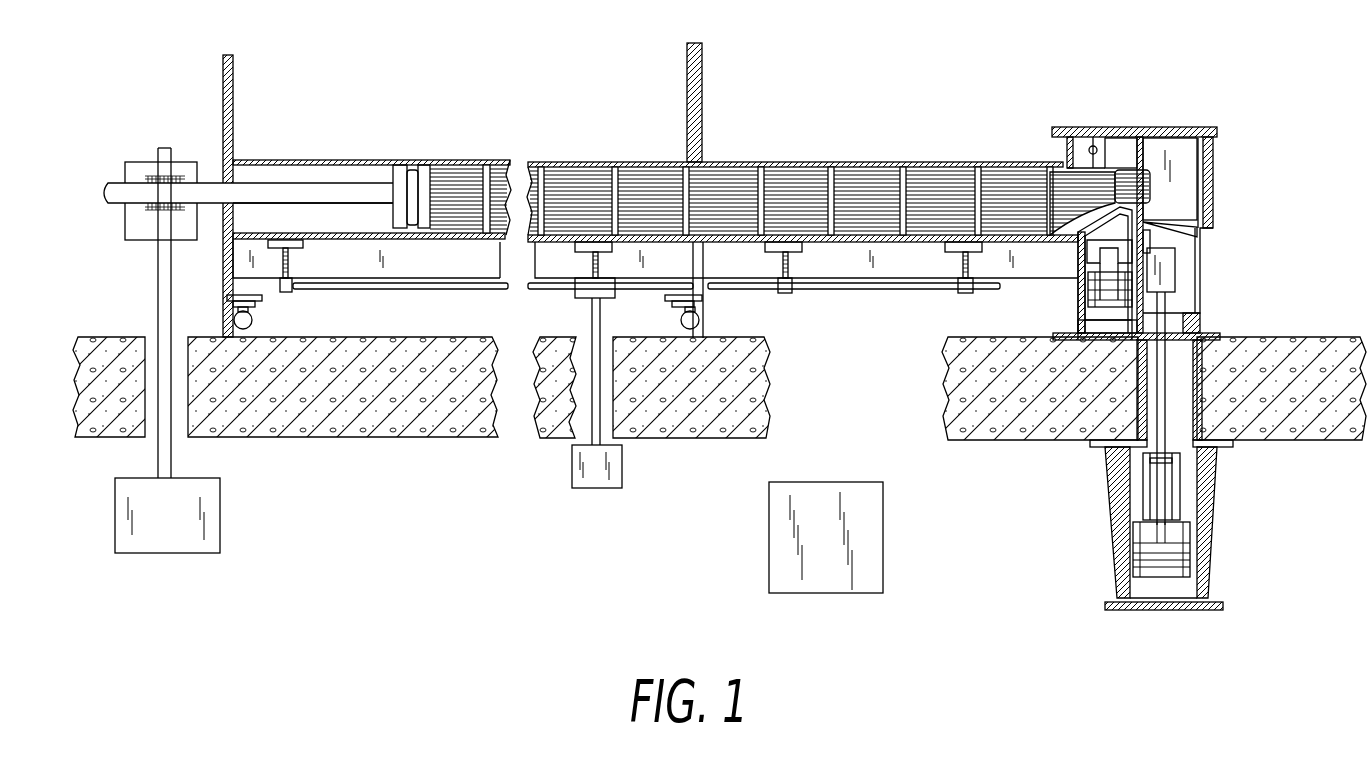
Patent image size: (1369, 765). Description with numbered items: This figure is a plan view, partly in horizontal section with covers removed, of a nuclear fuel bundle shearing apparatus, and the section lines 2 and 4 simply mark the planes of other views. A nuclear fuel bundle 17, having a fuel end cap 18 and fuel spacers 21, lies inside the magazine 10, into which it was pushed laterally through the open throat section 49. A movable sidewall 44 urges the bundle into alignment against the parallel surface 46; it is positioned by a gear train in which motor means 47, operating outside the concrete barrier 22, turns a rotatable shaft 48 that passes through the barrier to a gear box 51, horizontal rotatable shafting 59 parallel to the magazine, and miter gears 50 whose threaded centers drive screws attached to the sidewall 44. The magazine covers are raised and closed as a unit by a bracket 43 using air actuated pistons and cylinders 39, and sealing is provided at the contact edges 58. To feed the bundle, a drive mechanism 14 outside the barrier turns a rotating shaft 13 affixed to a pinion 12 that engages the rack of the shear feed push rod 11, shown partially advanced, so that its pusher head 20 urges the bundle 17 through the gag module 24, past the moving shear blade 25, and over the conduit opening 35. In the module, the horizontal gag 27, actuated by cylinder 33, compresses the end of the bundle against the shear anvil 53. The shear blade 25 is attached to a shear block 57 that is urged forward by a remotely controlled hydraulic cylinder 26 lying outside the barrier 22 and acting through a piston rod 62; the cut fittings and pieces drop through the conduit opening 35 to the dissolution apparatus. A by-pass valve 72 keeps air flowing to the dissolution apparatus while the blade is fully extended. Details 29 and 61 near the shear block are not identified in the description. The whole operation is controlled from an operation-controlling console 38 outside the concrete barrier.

The section line 2- 2 is at (694, 167).
The section line 4- 4 is at (443, 205).
The magazine 10 is at (330, 172).
The shear feed push rod 11 is at (212, 183).
The pinion 12 is at (150, 178).
The rotating shaft 13 is at (173, 445).
The drive mechanism 14 is at (220, 518).
The nuclear fuel bundle 17 is at (1150, 185).
The fuel end cap 18 is at (425, 168).
The pusher head 20 is at (398, 175).
The fuel spacers 21 is at (975, 195).
The concrete barrier 22 is at (110, 437).
The gag module 24 is at (1078, 326).
The shear blade 25 is at (1152, 240).
The hydraulic cylinder 26 is at (1187, 507).
The horizontal gag 27 is at (1100, 230).
The wedge 29 is at (1145, 224).
The cylinder 33 is at (1108, 356).
The conduit opening 35 is at (1182, 155).
The operation-controlling console 38 is at (883, 550).
The air actuated pistons and cylinders 39 is at (253, 318).
The bracket 43 is at (230, 305).
The movable sidewall 44 is at (458, 244).
The parallel surface 46 is at (877, 162).
The motor means 47 is at (600, 490).
The rotatable shaft 48 is at (592, 437).
The open throat section 49 is at (567, 185).
The miter gears 50 is at (292, 290).
The gear box 51 is at (605, 298).
The shear anvil 53 is at (1122, 148).
The shear block 57 is at (1175, 280).
The contact edges 58 is at (235, 160).
The horizontal rotatable shafting 59 is at (400, 288).
The spring 61 is at (1105, 265).
The piston rod 62 is at (1160, 500).
The by-pass valve 72 is at (1088, 150).